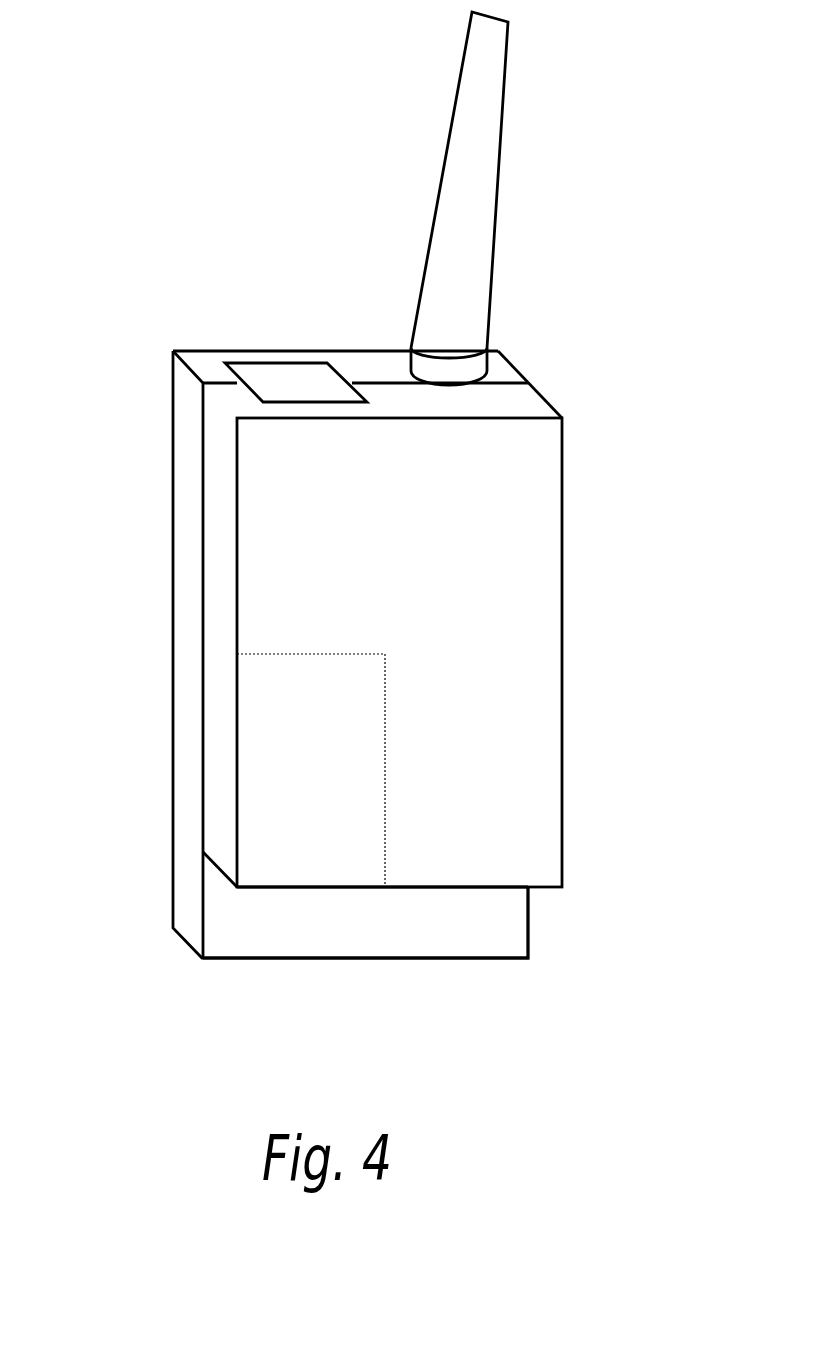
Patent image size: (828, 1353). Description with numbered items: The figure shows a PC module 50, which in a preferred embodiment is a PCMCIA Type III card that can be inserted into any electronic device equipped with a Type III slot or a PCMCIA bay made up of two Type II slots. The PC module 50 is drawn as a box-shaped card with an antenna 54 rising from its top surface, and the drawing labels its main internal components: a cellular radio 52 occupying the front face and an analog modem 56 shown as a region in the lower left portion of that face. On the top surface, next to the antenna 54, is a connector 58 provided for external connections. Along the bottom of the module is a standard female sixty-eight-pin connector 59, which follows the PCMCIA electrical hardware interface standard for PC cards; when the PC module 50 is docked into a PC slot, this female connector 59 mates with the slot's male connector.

The PC module 50 is at (573, 722).
The cellular radio 52 is at (435, 652).
The antenna 54 is at (406, 198).
The analog modem 56 is at (236, 770).
The connector 58 is at (260, 326).
The female 68-pin connector 59 is at (371, 958).